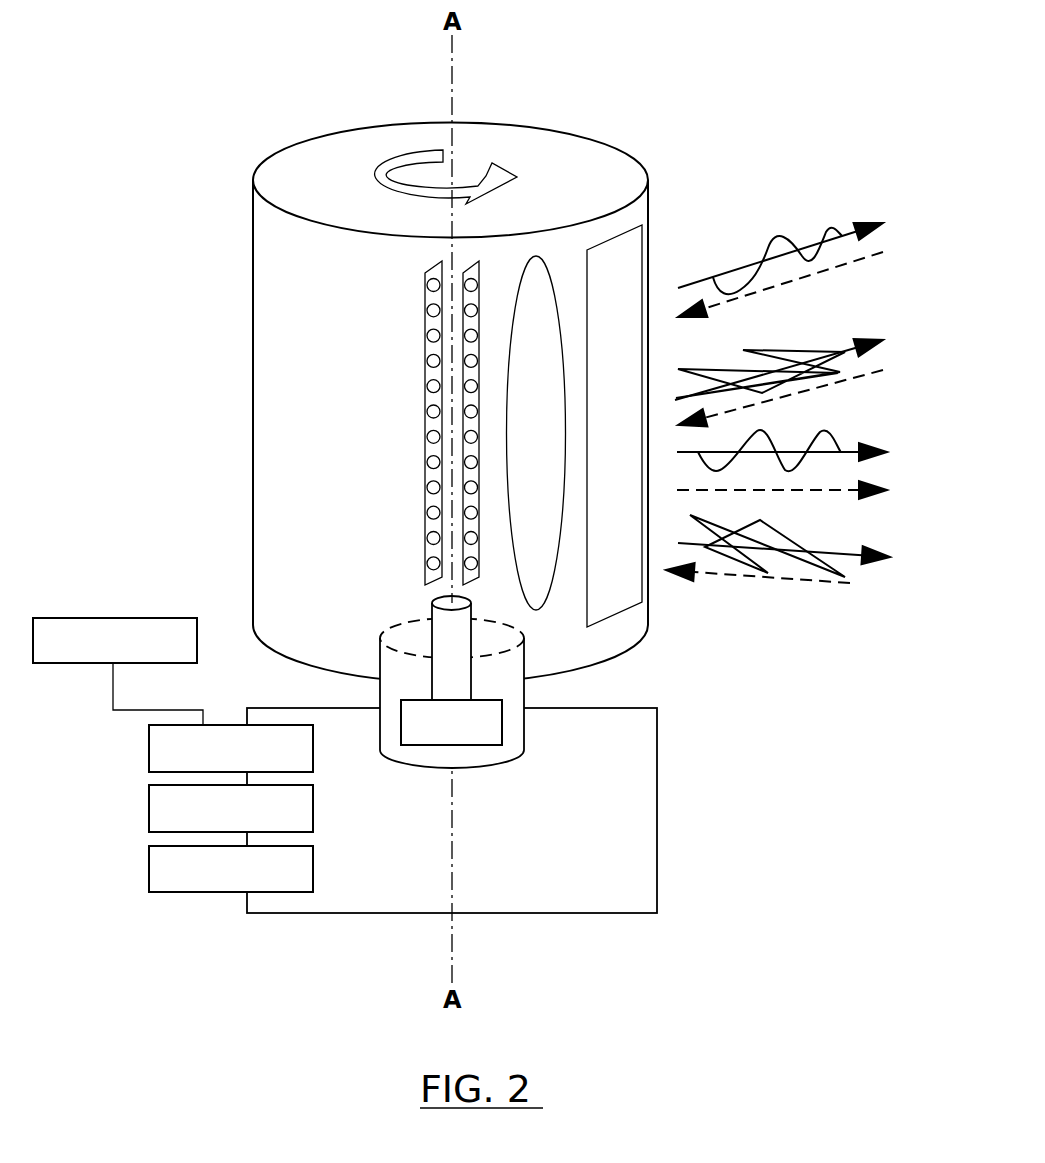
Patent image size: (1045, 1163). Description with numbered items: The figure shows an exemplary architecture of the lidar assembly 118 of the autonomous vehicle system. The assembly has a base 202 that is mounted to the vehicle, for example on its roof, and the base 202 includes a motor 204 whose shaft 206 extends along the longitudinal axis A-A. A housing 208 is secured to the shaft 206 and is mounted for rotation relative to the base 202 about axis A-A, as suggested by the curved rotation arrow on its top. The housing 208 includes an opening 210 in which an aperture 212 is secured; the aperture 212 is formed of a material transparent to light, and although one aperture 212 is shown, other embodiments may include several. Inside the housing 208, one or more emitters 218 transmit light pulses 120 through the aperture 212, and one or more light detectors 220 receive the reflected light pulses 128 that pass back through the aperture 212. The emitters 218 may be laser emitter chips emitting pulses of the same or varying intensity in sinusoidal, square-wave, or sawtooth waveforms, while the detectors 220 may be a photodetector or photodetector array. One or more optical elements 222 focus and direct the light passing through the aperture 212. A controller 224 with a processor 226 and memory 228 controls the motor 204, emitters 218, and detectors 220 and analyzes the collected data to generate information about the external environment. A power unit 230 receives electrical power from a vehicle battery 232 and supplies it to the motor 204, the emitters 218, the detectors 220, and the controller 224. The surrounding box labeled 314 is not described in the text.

The lidar assembly 118 is at (229, 72).
The light pulses 120 is at (820, 232).
The reflected light pulses 128 is at (848, 264).
The base 202 is at (492, 768).
The motor 204 is at (503, 725).
The shaft 206 is at (432, 600).
The housing 208 is at (253, 210).
The opening 210 is at (632, 262).
The aperture 212 is at (633, 262).
The emitters 218 is at (425, 298).
The light detectors 220 is at (468, 266).
The optical elements 222 is at (535, 257).
The controller 224 is at (197, 942).
The processor 226 is at (149, 866).
The memory 228 is at (149, 806).
The power unit 230 is at (149, 745).
The vehicle battery 232 is at (103, 618).
The base 314 is at (657, 800).